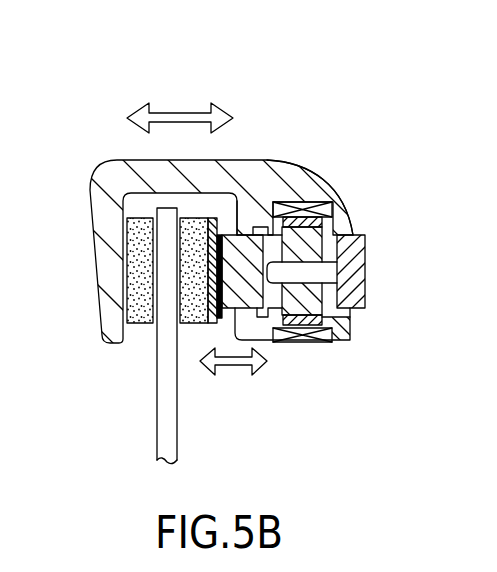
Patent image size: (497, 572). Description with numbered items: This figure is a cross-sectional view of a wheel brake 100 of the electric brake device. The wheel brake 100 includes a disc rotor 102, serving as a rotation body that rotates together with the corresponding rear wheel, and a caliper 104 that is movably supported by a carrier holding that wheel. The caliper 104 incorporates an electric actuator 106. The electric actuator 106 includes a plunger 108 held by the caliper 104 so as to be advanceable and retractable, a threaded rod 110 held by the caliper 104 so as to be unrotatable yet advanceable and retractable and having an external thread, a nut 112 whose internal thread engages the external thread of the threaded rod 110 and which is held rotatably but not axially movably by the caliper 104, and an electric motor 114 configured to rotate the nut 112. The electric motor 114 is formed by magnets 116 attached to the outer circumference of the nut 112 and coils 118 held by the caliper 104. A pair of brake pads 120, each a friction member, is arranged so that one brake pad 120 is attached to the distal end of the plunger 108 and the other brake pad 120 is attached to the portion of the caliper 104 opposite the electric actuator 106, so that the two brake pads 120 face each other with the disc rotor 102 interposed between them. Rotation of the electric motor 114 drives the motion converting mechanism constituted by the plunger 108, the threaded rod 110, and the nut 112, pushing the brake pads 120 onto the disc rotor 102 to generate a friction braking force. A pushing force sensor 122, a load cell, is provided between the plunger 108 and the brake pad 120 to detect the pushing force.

The wheel brake 100 is at (323, 72).
The disc rotor 102 is at (170, 432).
The caliper 104 is at (110, 173).
The electric actuator 106 is at (312, 170).
The plunger 108 is at (243, 293).
The threaded rod 110 is at (320, 266).
The nut 112 is at (345, 282).
The electric motor 114 is at (347, 330).
The magnets 116 is at (313, 320).
The coils 118 is at (326, 342).
The brake pads 120 is at (140, 317).
The pushing force sensor 122 is at (243, 233).